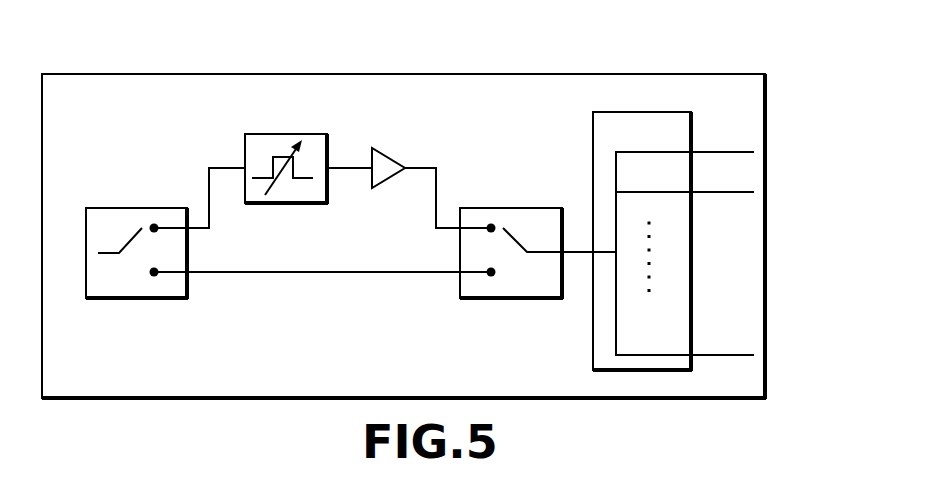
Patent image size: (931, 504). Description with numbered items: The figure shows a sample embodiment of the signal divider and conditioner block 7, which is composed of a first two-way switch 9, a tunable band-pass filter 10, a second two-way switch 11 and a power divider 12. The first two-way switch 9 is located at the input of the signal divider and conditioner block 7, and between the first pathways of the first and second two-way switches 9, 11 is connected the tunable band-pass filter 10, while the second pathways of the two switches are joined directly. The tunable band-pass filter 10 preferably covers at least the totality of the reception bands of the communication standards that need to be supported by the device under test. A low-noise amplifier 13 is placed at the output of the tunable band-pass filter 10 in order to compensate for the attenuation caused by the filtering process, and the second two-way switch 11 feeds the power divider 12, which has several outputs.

The signal divider and conditioner block 7 is at (121, 74).
The first two-way switch 9 is at (141, 299).
The tunable band-pass filter 10 is at (245, 144).
The second two-way switch 11 is at (505, 299).
The power divider 12 is at (593, 148).
The low-noise amplifier 13 is at (390, 156).